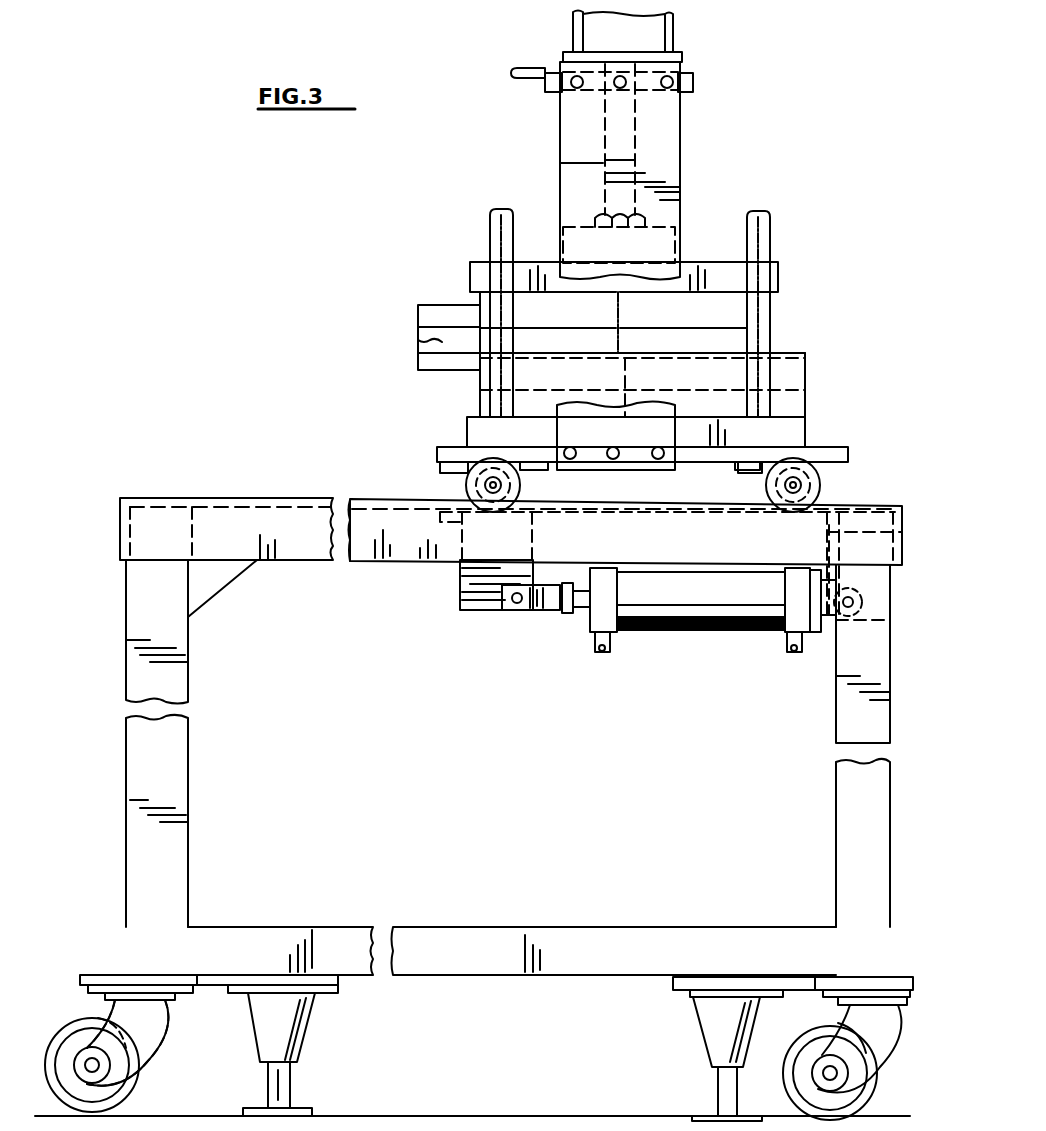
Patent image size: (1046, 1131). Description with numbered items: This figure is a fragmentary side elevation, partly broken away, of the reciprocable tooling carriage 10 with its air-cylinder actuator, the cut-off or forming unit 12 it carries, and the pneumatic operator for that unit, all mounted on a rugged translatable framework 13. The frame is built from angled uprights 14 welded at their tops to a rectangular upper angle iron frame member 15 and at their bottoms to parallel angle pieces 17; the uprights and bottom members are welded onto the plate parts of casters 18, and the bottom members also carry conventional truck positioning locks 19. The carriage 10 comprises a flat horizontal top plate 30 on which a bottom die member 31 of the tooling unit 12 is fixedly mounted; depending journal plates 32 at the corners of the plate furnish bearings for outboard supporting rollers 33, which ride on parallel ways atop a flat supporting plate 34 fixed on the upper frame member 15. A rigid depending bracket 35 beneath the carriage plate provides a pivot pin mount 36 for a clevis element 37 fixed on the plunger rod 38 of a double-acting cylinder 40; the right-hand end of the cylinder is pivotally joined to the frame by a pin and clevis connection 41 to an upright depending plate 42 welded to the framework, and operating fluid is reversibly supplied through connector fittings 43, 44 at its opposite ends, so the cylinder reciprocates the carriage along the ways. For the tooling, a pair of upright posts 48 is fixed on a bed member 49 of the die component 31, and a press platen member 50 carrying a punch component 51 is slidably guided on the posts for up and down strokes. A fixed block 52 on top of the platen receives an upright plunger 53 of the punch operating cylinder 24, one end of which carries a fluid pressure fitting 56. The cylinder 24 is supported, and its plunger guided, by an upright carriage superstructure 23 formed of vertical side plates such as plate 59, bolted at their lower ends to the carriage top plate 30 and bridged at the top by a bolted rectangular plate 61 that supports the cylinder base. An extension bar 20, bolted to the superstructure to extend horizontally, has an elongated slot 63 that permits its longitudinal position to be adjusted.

The reciprocable carriage 10 is at (639, 506).
The forming unit 12 is at (790, 341).
The translatable framework 13 is at (122, 888).
The angled uprights 14 is at (177, 782).
The upper angle iron frame member 15 is at (380, 548).
The parallel angle pieces 17 is at (363, 942).
The casters 18 is at (130, 1087).
The truck positioning locks 19 is at (293, 1045).
The extension bar 20 is at (440, 304).
The carriage superstructure 23 is at (684, 173).
The punch operating cylinder 24 is at (610, 34).
The top plate 30 is at (437, 455).
The bottom die member 31 is at (812, 402).
The journal plates 32 is at (536, 470).
The supporting rollers 33 is at (465, 487).
The supporting plate 34 is at (610, 515).
The depending bracket 35 is at (470, 577).
The pivot pin mount 36 is at (514, 602).
The clevis element 37 is at (550, 606).
The plunger rod 38 is at (582, 605).
The cylinder 40 is at (690, 640).
The pin and clevis connection 41 is at (830, 625).
The upright depending plate 42 is at (822, 568).
The connector fitting 43 is at (598, 646).
The connector fitting 44 is at (795, 650).
The upright posts 48 is at (500, 210).
The bed member 49 is at (467, 432).
The press platen member 50 is at (695, 272).
The punch component 51 is at (724, 319).
The fixed block 52 is at (580, 222).
The upright plunger 53 is at (637, 160).
The fluid pressure fitting 56 is at (538, 78).
The side plate 59 is at (560, 435).
The rectangular plate 61 is at (694, 76).
The elongated slot 63 is at (418, 338).